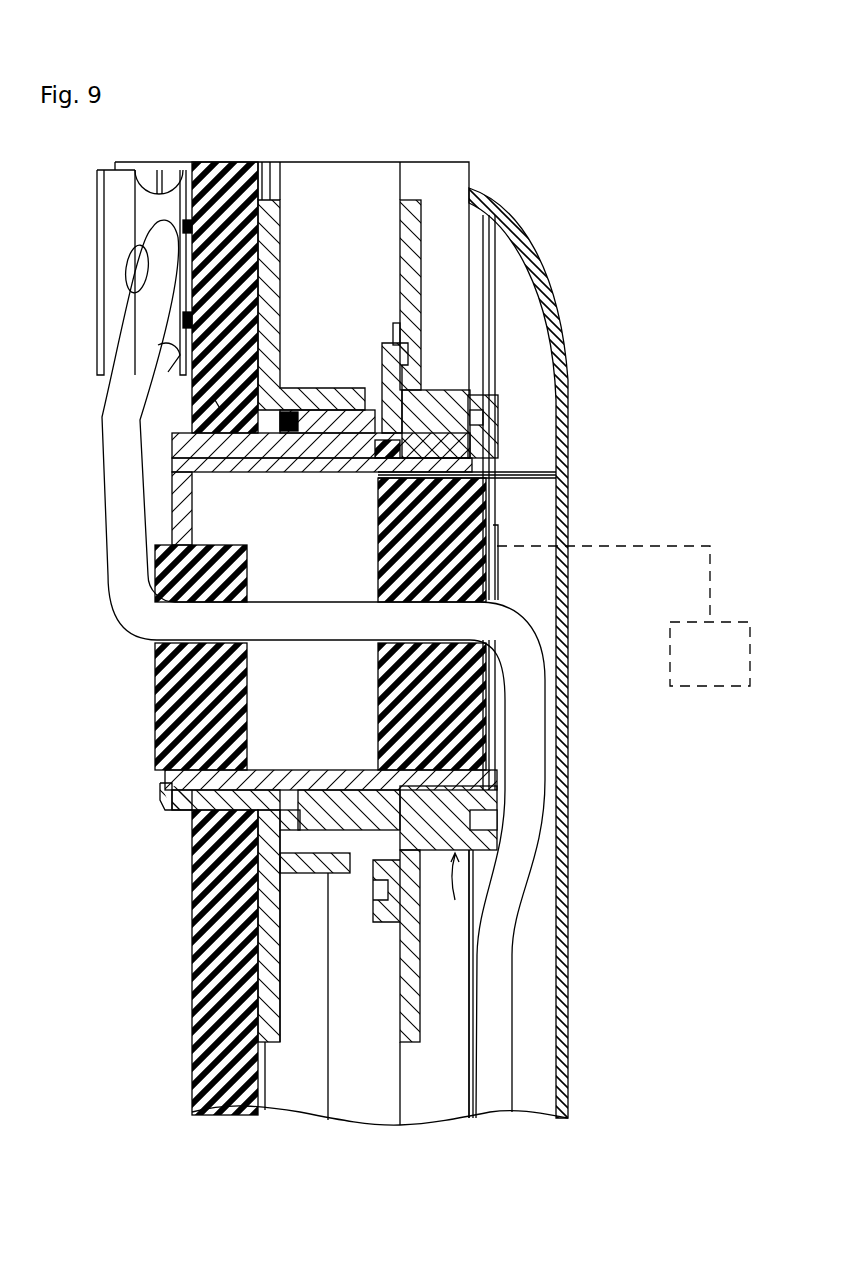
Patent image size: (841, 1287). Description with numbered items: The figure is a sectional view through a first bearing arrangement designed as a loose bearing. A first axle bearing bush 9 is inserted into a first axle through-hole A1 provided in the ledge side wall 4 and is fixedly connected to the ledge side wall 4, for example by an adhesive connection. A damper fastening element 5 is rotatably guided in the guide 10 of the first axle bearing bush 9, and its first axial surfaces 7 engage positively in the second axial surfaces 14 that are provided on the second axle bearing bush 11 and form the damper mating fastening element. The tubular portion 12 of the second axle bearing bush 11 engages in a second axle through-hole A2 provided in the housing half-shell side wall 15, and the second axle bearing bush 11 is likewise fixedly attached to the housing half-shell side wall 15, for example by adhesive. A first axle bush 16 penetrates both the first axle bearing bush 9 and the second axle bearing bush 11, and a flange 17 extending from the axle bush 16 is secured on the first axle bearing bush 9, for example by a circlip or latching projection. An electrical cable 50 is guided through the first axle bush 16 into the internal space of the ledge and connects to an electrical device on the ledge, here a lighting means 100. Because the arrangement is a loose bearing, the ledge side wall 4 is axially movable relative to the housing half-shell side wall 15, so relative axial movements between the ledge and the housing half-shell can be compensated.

The ledge side wall 4 is at (443, 185).
The housing half-shell side wall 15 is at (207, 162).
The second axle bearing bush 11 is at (283, 200).
The first axle bearing bush 9 is at (460, 398).
The second axial surfaces 14 is at (310, 440).
The flange 17 is at (488, 446).
The first axle bush 16 is at (520, 478).
The first axial surfaces 7 is at (360, 742).
The electrical cable 50 is at (375, 660).
The tubular portion 12 is at (170, 803).
The damper fastening element 5 is at (383, 832).
The guide 10 is at (383, 890).
The second axle through-hole A2 is at (218, 407).
The first axle through-hole A1 is at (455, 900).
The lighting means 100 is at (623, 616).